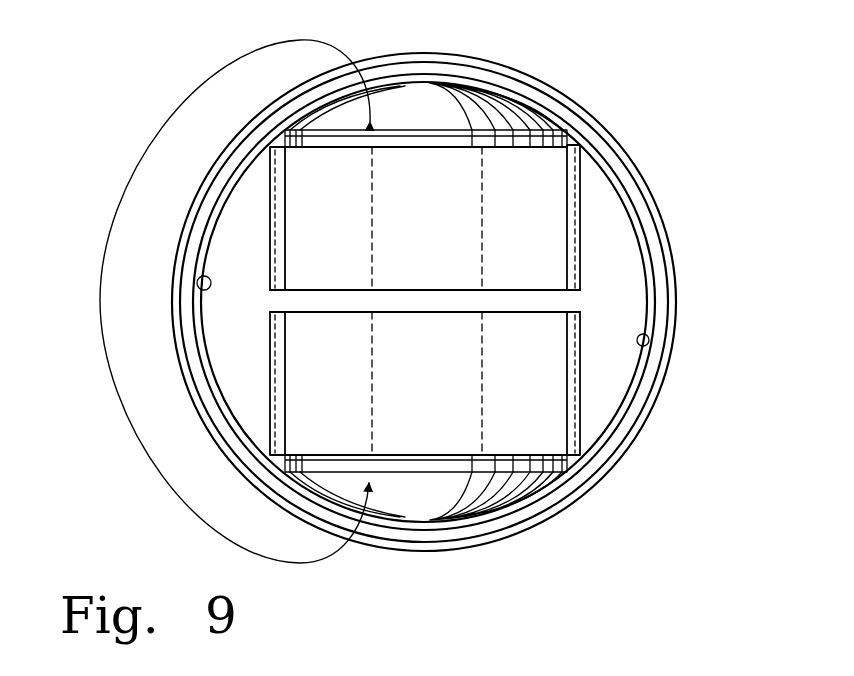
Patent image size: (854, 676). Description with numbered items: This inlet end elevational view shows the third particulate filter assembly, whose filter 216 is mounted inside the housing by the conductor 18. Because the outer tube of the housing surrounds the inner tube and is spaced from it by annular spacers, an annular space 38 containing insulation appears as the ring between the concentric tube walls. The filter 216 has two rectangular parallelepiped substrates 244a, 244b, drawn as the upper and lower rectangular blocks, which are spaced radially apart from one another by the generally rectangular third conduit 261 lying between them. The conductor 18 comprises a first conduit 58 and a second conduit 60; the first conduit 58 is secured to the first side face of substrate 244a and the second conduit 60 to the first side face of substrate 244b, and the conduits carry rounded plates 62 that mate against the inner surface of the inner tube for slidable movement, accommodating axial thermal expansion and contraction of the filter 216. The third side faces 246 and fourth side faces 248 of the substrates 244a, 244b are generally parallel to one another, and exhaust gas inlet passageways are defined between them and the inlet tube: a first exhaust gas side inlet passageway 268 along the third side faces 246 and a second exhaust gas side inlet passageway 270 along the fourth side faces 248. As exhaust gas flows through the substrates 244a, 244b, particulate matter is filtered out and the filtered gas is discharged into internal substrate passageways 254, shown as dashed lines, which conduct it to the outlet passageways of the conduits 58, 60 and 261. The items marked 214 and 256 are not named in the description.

The conductor 18 is at (359, 302).
The first conduit 58 is at (380, 302).
The second conduit 60 is at (88, 272).
The flow path 214 is at (158, 76).
The annular space 38 is at (412, 58).
The rounded plates 62 is at (520, 110).
The substrate 244a is at (556, 158).
The substrate 244b is at (553, 428).
The third side face 246 is at (268, 172).
The fourth side face 248 is at (583, 167).
The internal substrate passageways 254 is at (373, 222).
The rail ends 256 is at (270, 283).
The third conduit 261 is at (533, 295).
The filter 216 is at (624, 290).
The first exhaust gas side inlet passageway 268 is at (200, 280).
The second exhaust gas side inlet passageway 270 is at (649, 342).